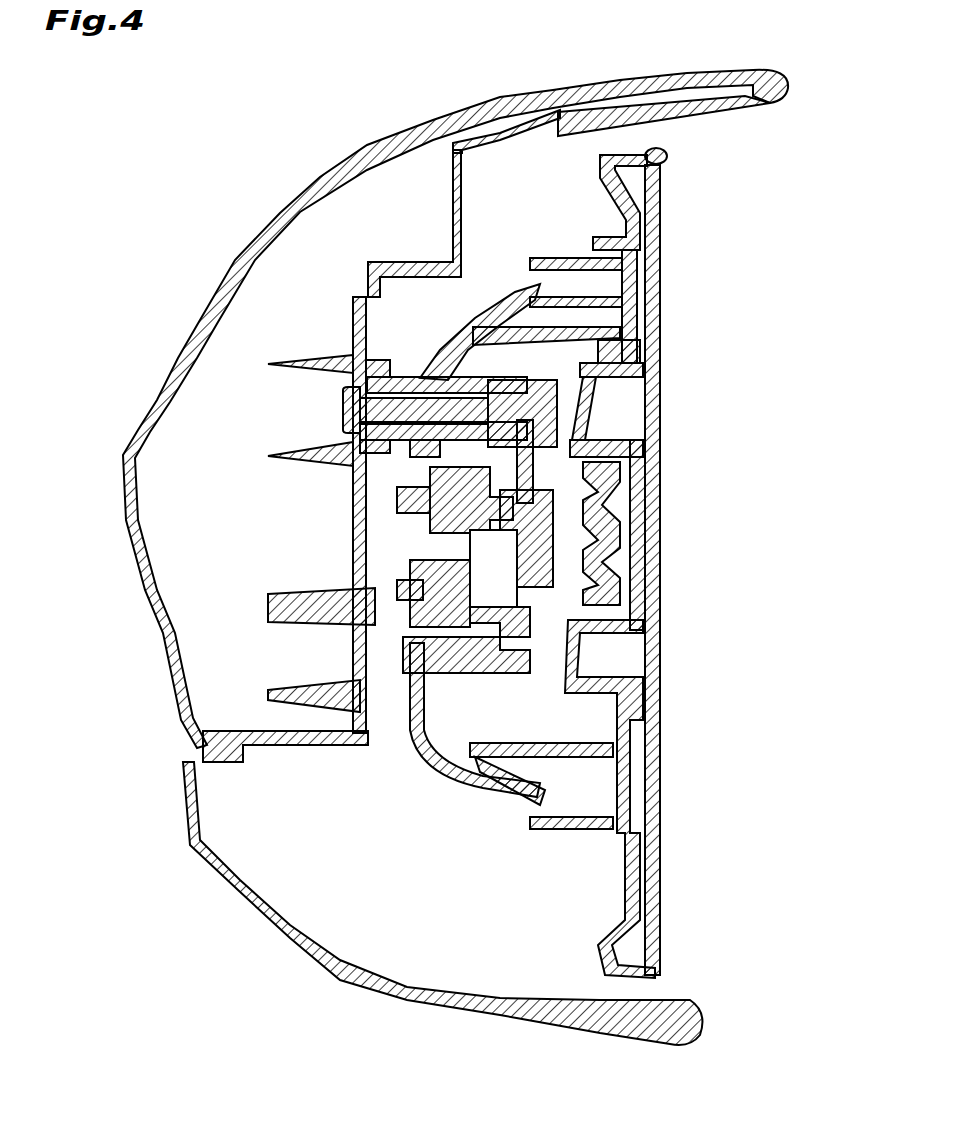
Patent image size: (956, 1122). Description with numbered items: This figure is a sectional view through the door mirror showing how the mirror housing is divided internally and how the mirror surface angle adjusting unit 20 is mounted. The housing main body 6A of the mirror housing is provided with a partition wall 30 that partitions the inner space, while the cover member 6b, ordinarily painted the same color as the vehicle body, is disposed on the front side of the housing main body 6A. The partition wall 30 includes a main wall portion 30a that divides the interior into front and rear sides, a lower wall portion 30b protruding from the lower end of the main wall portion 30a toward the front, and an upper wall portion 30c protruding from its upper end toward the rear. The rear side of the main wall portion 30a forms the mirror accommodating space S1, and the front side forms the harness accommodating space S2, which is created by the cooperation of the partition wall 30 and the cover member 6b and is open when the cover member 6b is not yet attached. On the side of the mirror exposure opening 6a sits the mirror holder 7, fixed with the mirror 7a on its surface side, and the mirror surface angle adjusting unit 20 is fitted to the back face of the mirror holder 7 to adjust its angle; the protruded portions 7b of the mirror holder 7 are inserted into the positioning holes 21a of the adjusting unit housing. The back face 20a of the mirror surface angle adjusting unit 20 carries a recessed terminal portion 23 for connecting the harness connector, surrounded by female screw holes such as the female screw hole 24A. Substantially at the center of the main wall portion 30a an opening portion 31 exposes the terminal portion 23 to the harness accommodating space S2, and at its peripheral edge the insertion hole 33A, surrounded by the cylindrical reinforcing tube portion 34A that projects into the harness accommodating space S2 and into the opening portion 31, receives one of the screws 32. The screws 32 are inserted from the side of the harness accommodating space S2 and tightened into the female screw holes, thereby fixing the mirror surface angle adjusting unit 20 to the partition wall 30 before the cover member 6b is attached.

The mirror exposure opening 6a is at (717, 595).
The cover member 6b is at (363, 162).
The housing main body 6A is at (693, 115).
The mirror holder 7 is at (625, 878).
The mirror 7a is at (662, 527).
The protruded portions 7b is at (577, 420).
The mirror surface angle adjusting unit 20 is at (465, 790).
The back face 20a is at (408, 697).
The positioning holes 21a is at (607, 350).
The terminal portion 23 is at (405, 530).
The female screw hole 24A is at (450, 386).
The partition wall 30 is at (330, 273).
The main wall portion 30a is at (353, 330).
The lower wall portion 30b is at (297, 748).
The upper wall portion 30c is at (516, 128).
The opening portion 31 is at (366, 516).
The screws 32 is at (345, 416).
The insertion hole 33A is at (388, 393).
The reinforcing tube portion 34A is at (312, 455).
The mirror accommodating space S1 is at (541, 206).
The harness accommodating space S2 is at (393, 232).